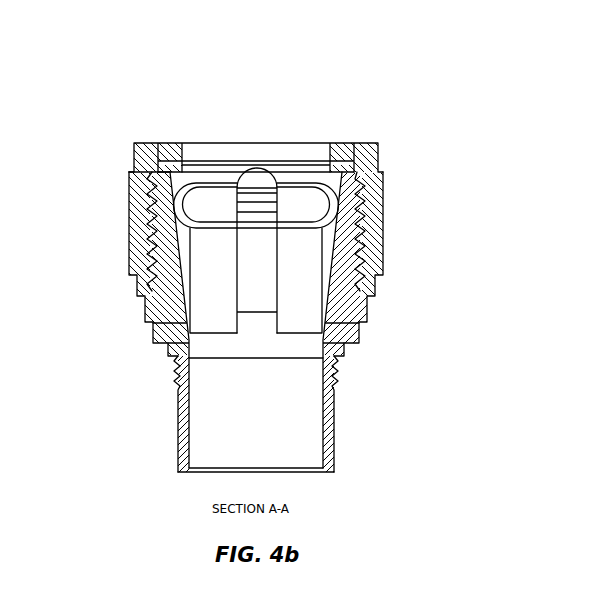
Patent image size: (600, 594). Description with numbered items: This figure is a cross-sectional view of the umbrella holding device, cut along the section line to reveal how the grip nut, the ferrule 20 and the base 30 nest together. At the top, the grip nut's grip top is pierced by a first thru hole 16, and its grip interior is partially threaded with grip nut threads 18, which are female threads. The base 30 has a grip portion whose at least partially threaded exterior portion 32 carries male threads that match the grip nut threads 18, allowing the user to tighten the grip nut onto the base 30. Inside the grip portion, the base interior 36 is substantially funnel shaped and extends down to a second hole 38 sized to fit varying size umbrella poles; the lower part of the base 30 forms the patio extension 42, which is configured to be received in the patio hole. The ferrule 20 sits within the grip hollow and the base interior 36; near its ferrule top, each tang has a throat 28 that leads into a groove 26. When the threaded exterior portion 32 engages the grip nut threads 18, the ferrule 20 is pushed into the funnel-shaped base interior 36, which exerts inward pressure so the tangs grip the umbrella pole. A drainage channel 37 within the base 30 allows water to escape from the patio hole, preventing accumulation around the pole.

The first thru hole 16 is at (222, 148).
The grip nut threads 18 is at (376, 164).
The throat 28 is at (202, 177).
The groove 26 is at (308, 207).
The ferrule 20 is at (348, 245).
The base 30 is at (363, 270).
The at least partially threaded exterior portion 32 is at (363, 302).
The base interior 36 is at (176, 262).
The drainage channel 37 is at (182, 332).
The second hole 38 is at (213, 434).
The patio extension 42 is at (223, 472).